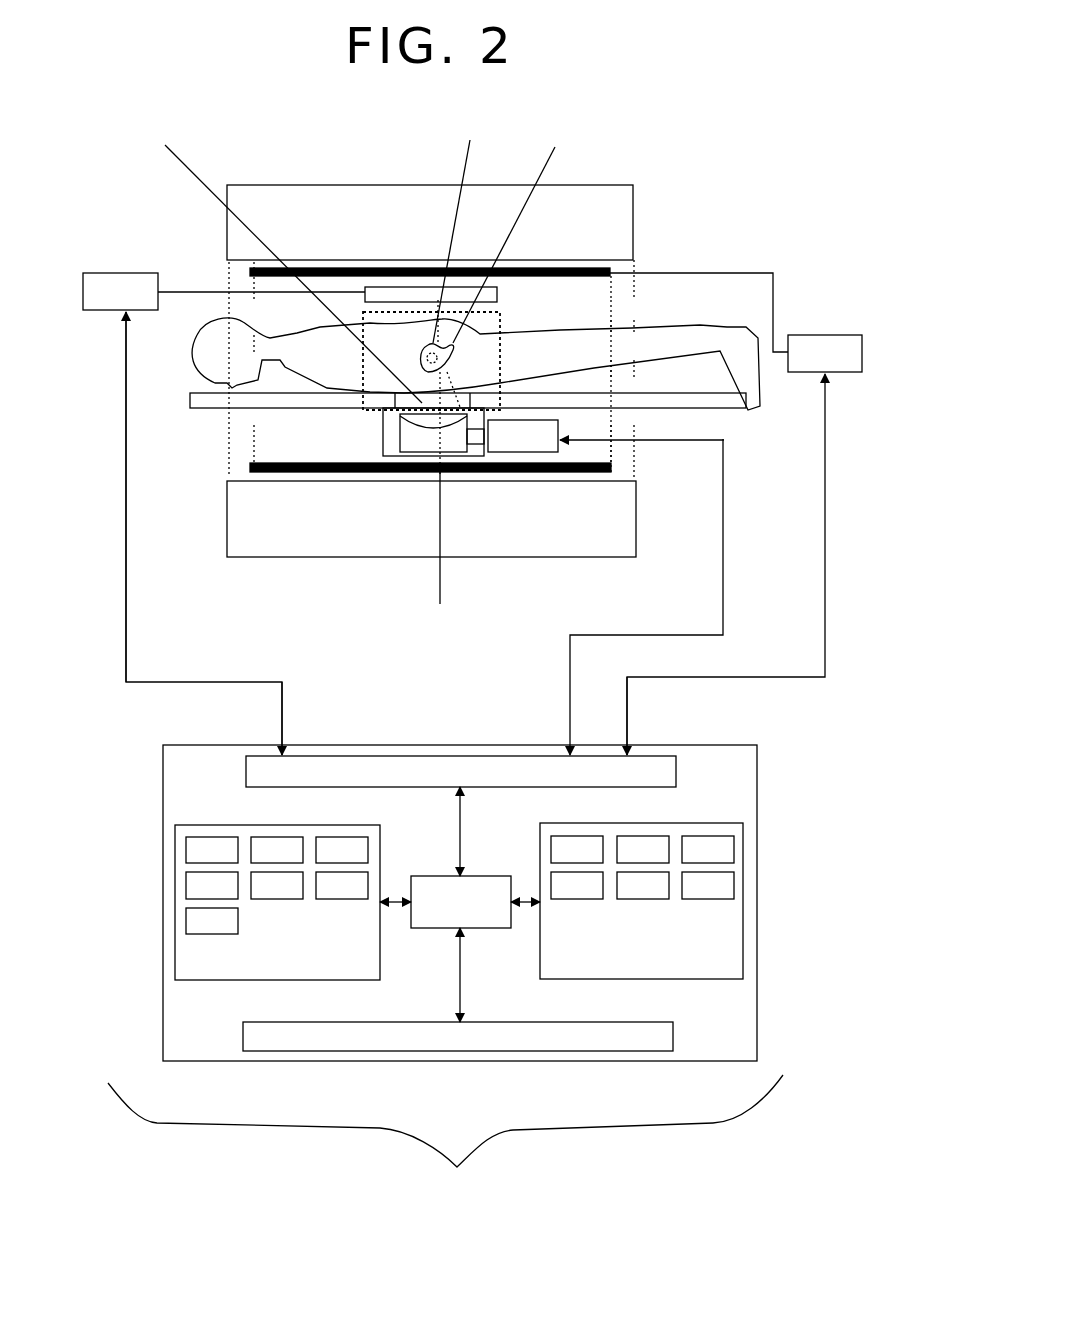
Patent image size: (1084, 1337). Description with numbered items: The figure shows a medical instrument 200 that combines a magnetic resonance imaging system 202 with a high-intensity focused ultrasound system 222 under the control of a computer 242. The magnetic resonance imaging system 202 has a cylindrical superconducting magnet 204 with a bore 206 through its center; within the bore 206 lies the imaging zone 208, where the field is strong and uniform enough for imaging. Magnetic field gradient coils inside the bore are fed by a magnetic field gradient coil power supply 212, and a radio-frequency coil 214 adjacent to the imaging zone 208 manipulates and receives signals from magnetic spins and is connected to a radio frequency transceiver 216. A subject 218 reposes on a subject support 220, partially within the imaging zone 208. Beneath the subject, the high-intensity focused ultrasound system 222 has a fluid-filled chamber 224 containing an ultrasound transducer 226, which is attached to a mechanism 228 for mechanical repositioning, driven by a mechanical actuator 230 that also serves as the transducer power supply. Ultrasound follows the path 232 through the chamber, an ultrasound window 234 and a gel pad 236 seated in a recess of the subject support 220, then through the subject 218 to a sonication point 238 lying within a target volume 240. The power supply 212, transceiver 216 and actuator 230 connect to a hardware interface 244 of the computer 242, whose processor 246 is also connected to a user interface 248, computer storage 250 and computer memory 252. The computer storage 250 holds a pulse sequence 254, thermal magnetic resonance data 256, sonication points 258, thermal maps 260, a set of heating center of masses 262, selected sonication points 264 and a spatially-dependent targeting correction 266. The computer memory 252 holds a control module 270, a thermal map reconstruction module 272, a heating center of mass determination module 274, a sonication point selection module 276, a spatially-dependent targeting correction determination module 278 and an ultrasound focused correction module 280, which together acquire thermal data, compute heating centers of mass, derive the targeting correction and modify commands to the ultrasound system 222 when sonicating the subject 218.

The medical instrument 200 is at (445, 1148).
The magnetic resonance imaging system 202 is at (712, 175).
The magnet 204 is at (634, 226).
The bore 206 is at (645, 302).
The imaging zone 208 is at (500, 340).
The magnetic field gradient coil power supply 212 is at (825, 353).
The radio-frequency coil 214 is at (404, 287).
The radio frequency transceiver 216 is at (120, 291).
The subject 218 is at (197, 335).
The subject support 220 is at (191, 410).
The high-intensity focused ultrasound system 222 is at (364, 440).
The fluid-filled chamber 224 is at (391, 441).
The ultrasound transducer 226 is at (416, 441).
The mechanism 228 is at (479, 447).
The mechanical actuator 230 is at (526, 444).
The ultrasound path 232 is at (413, 397).
The ultrasound window 234 is at (450, 555).
The gel pad 236 is at (279, 260).
The sonication point 238 is at (464, 228).
The target volume 240 is at (525, 231).
The computer 242 is at (758, 795).
The hardware interface 244 is at (461, 772).
The processor 246 is at (461, 902).
The user interface 248 is at (458, 1037).
The computer storage 250 is at (170, 888).
The computer memory 252 is at (747, 865).
The pulse sequence 254 is at (213, 849).
The thermal magnetic resonance data 256 is at (278, 849).
The sonication points 258 is at (343, 849).
The thermal maps 260 is at (213, 884).
The set of heating center of masses 262 is at (278, 884).
The selected sonication points 264 is at (343, 884).
The spatially-dependent targeting correction 266 is at (213, 920).
The control module 270 is at (578, 848).
The thermal map reconstruction module 272 is at (644, 848).
The heating center of mass determination module 274 is at (709, 848).
The sonication point selection module 276 is at (578, 884).
The spatially-dependent targeting correction determination module 278 is at (644, 884).
The ultrasound focused correction module 280 is at (709, 884).